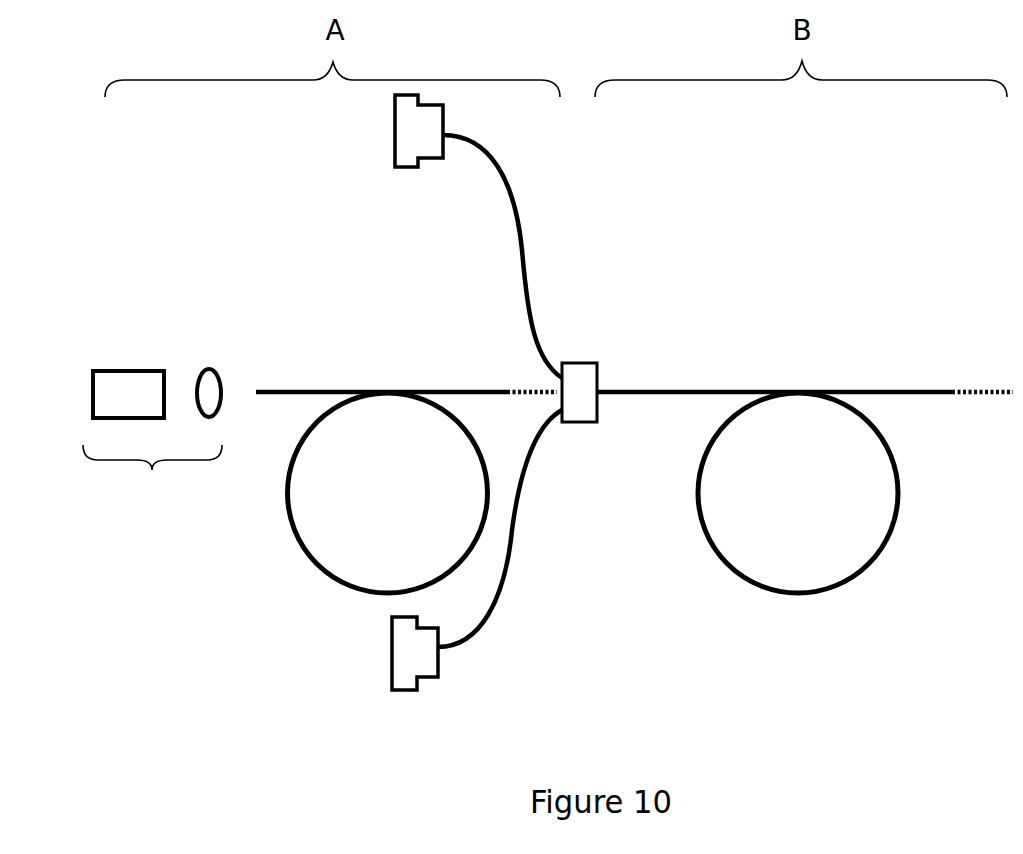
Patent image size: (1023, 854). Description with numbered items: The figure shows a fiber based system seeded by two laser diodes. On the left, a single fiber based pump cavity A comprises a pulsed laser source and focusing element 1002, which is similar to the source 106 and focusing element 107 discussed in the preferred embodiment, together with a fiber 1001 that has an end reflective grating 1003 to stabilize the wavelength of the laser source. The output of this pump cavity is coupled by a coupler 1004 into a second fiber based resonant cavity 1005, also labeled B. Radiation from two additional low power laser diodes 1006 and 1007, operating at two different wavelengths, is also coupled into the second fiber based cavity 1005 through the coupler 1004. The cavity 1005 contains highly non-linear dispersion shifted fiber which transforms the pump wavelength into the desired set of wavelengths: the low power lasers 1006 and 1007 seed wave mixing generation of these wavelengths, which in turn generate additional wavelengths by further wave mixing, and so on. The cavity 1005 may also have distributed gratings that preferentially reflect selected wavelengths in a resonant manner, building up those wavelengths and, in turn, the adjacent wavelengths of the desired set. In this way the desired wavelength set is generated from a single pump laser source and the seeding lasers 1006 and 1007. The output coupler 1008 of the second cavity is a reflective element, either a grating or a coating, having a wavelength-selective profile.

The source 106 is at (124, 352).
The focusing element 107 is at (212, 360).
The pulsed laser source and focusing element 1002 is at (152, 484).
The fiber 1001 is at (305, 570).
The end reflective grating 1003 is at (515, 377).
The coupler 1004 is at (587, 350).
The second fiber based resonant cavity 1005 is at (870, 575).
The low power laser diode 1006 is at (390, 128).
The low power laser diode 1007 is at (393, 700).
The output coupler 1008 is at (977, 383).